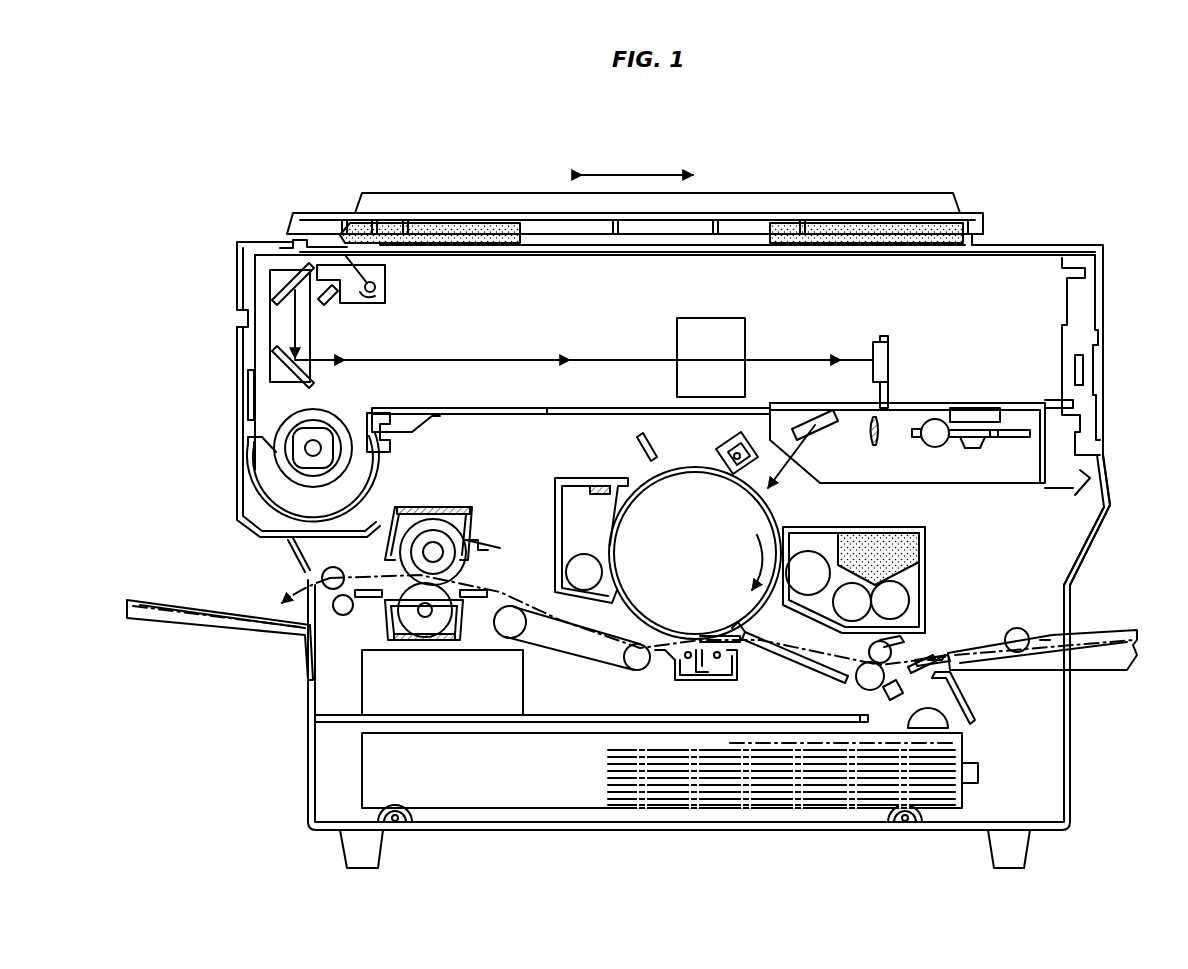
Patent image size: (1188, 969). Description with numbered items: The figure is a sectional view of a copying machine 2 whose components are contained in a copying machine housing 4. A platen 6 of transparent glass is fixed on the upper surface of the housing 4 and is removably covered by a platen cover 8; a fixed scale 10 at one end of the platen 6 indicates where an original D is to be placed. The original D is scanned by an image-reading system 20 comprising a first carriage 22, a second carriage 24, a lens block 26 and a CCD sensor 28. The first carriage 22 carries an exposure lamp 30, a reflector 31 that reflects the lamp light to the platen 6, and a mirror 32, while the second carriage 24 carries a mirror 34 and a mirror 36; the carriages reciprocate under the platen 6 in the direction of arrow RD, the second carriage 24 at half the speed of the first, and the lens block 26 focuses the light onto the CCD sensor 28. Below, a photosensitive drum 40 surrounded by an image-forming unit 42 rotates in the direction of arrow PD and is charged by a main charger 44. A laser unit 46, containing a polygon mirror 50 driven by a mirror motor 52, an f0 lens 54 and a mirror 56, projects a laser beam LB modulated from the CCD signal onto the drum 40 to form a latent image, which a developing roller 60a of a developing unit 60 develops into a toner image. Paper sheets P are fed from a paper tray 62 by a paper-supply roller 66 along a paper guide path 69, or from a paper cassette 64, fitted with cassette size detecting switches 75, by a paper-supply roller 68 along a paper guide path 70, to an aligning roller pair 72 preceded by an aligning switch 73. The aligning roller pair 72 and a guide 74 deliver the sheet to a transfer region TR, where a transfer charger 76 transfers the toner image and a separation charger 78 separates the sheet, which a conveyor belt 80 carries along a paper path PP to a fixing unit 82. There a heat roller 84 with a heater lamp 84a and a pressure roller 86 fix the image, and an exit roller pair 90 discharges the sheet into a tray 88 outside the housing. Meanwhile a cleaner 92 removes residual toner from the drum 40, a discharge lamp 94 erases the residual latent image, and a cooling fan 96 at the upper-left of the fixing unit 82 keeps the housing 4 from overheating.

The copying machine 2 is at (1058, 205).
The copying machine housing 4 is at (1112, 500).
The platen 6 is at (636, 258).
The platen cover 8 is at (799, 193).
The fixed scale 10 is at (345, 248).
The image-reading system 20 is at (852, 300).
The first carriage 22 is at (380, 306).
The second carriage 24 is at (280, 268).
The lens block 26 is at (745, 333).
The CCD sensor 28 is at (888, 358).
The exposure lamp 30 is at (383, 280).
The reflector 31 is at (385, 296).
The mirror 32 is at (329, 303).
The mirror 34 is at (278, 292).
The mirror 36 is at (285, 372).
The photosensitive drum 40 is at (678, 470).
The image-forming unit 42 is at (937, 552).
The main charger 44 is at (724, 448).
The laser unit 46 is at (957, 395).
The polygon mirror 50 is at (1012, 440).
The mirror motor 52 is at (970, 442).
The f0 lens 54 is at (878, 445).
The mirror 56 is at (820, 410).
The developing unit 60 is at (927, 575).
The developing roller 60a is at (808, 555).
The paper tray 62 is at (1110, 635).
The paper cassette 64 is at (962, 810).
The paper-supply roller 66 is at (1017, 628).
The paper-supply roller 68 is at (947, 723).
The paper guide path 69 is at (932, 660).
The paper guide path 70 is at (962, 700).
The aligning roller pair 72 is at (862, 680).
The aligning switch 73 is at (903, 690).
The guide 74 is at (788, 668).
The cassette size detecting switches 75 is at (980, 775).
The transfer charger 76 is at (712, 675).
The separation charger 78 is at (682, 680).
The conveyor belt 80 is at (575, 650).
The fixing unit 82 is at (446, 520).
The heat roller 84 is at (410, 545).
The heater lamp 84a is at (458, 548).
The pressure roller 86 is at (436, 625).
The tray 88 is at (240, 640).
The exit roller pair 90 is at (340, 632).
The cleaner 92 is at (555, 523).
The discharge lamp 94 is at (640, 443).
The cooling fan 96 is at (290, 460).
The original D is at (488, 228).
The arrow indicating carriage direction RD is at (607, 175).
The laser beam LB is at (802, 440).
The arrow indicating drum rotation direction PD is at (758, 560).
The transfer region TR is at (718, 640).
The paper path PP is at (500, 598).
The paper sheet P is at (822, 800).